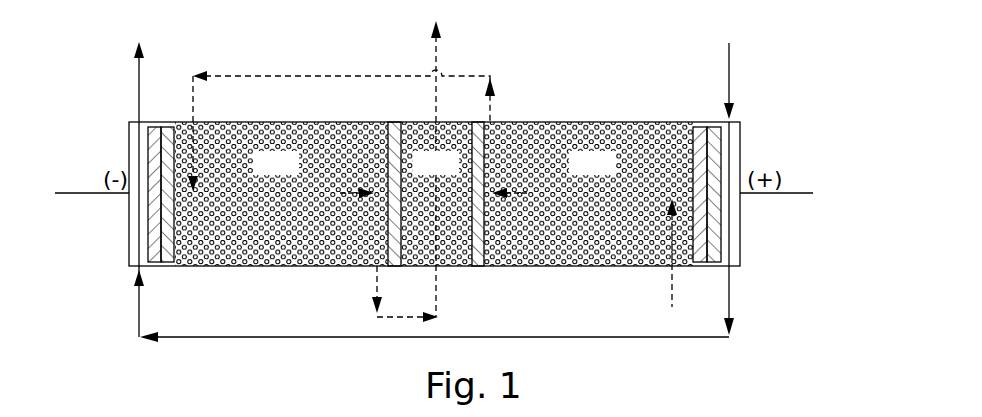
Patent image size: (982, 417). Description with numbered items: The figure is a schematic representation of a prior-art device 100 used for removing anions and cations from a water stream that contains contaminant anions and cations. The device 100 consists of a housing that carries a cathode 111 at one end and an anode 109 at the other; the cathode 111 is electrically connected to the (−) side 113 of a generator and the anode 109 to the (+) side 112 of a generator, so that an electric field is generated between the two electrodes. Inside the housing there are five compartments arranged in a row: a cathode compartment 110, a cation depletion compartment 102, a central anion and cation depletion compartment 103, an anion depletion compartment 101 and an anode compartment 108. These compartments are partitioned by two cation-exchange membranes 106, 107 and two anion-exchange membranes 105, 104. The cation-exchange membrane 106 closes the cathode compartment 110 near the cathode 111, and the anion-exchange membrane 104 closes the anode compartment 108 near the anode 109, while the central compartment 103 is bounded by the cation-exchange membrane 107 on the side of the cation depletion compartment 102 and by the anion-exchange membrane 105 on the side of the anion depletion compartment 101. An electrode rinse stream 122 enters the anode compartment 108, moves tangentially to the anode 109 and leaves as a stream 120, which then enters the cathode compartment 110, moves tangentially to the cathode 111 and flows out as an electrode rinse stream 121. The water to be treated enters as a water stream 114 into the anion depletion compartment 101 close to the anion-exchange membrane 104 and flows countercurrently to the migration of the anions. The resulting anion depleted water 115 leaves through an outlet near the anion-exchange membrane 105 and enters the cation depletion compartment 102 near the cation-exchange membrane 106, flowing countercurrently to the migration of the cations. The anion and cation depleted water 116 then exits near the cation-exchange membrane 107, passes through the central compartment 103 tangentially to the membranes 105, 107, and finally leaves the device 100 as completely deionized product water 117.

The device 100 is at (637, 80).
The anion depletion compartment 101 is at (613, 173).
The cation depletion compartment 102 is at (296, 173).
The central anion and cation depletion compartment 103 is at (456, 174).
The anion-exchange membrane 104 is at (698, 266).
The anion-exchange membrane 105 is at (475, 266).
The cation-exchange membrane 106 is at (170, 262).
The cation-exchange membrane 107 is at (395, 266).
The anode compartment 108 is at (735, 213).
The anode 109 is at (713, 127).
The cathode compartment 110 is at (133, 225).
The cathode 111 is at (155, 127).
The (+) side of a generator 112 is at (793, 193).
The (−) side of a generator 113 is at (78, 193).
The water stream 114 is at (670, 290).
The anion depleted water 115 is at (494, 105).
The anion and cation depleted water 116 is at (372, 284).
The completely deionized product water 117 is at (440, 52).
The stream 120 is at (135, 300).
The electrode rinse stream 121 is at (135, 80).
The electrode rinse stream 122 is at (732, 77).